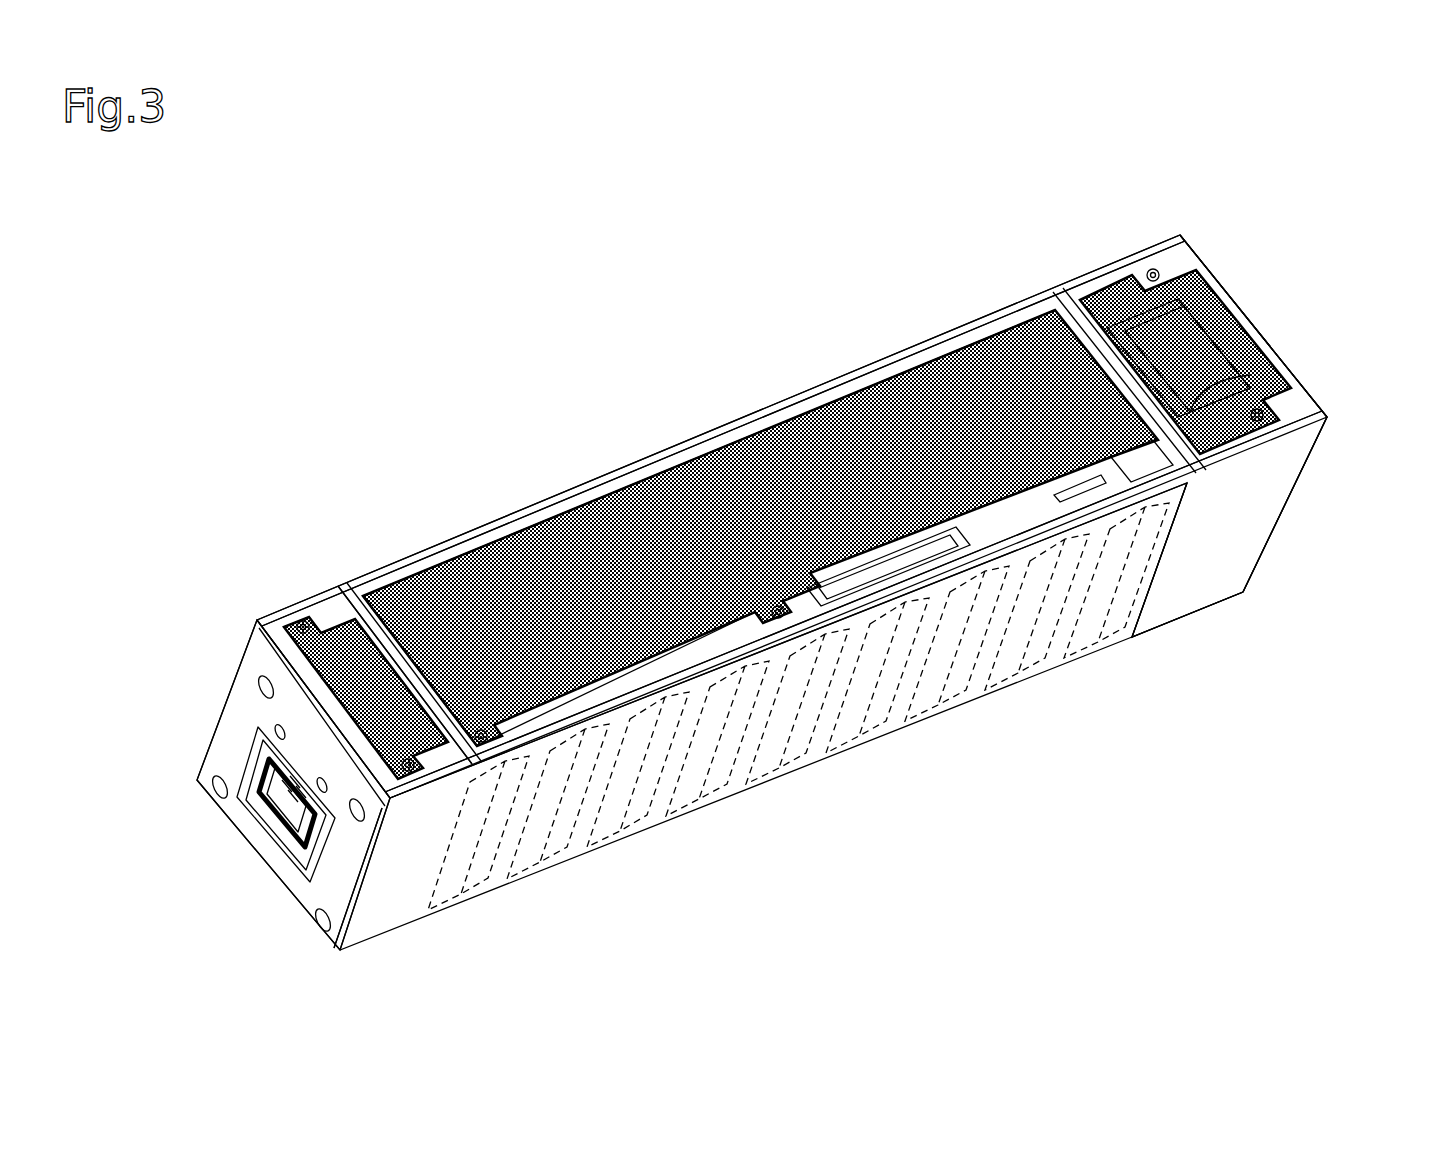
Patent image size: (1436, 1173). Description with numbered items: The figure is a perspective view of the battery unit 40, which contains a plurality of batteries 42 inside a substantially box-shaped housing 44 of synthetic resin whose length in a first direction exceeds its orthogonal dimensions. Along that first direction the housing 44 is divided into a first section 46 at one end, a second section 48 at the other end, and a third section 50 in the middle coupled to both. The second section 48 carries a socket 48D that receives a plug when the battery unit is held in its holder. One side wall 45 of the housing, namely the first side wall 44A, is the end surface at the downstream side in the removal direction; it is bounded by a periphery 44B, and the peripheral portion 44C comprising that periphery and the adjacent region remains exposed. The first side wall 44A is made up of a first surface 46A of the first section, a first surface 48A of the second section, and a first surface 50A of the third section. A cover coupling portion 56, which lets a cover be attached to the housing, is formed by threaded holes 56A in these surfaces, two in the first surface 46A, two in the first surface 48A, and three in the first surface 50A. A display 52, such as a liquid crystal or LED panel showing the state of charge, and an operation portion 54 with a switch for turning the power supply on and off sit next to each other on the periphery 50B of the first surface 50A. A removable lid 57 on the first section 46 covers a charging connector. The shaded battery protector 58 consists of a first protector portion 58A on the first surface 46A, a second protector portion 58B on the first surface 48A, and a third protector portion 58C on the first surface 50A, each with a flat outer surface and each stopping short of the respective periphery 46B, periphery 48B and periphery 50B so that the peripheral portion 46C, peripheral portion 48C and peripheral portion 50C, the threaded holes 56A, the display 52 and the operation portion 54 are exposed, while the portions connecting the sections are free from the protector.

The battery unit 40 is at (1181, 152).
The batteries 42 is at (1072, 652).
The housing 44 is at (945, 333).
The first side wall 44A is at (857, 383).
The periphery of the first side wall 44B is at (600, 487).
The peripheral portion of the first side wall 44C is at (567, 717).
The side wall 45 is at (447, 572).
The first section 46 is at (1140, 250).
The first surface of the first section 46A is at (1283, 420).
The periphery of the first surface of the first section 46B is at (1243, 450).
The peripheral portion of the first surface of the first section 46C is at (1290, 397).
The second section 48 is at (285, 612).
The first surface of the second section 48A is at (290, 620).
The periphery of the first surface of the second section 48B is at (350, 587).
The peripheral portion of the first surface of the second section 48C is at (402, 778).
The socket 48D is at (268, 830).
The third section 50 is at (458, 540).
The first surface of the third section 50A is at (712, 658).
The periphery of the first surface of the third section 50B is at (767, 417).
The peripheral portion of the first surface of the third section 50C is at (767, 630).
The display 52 is at (968, 542).
The operation portion 54 is at (1173, 460).
The cover coupling portion 56 is at (1162, 268).
The threaded holes 56A is at (774, 593).
The lid 57 is at (1200, 340).
The battery protector 58 is at (1016, 225).
The first protector portion 58A is at (1102, 295).
The second protector portion 58B is at (353, 688).
The third protector portion 58C is at (693, 467).